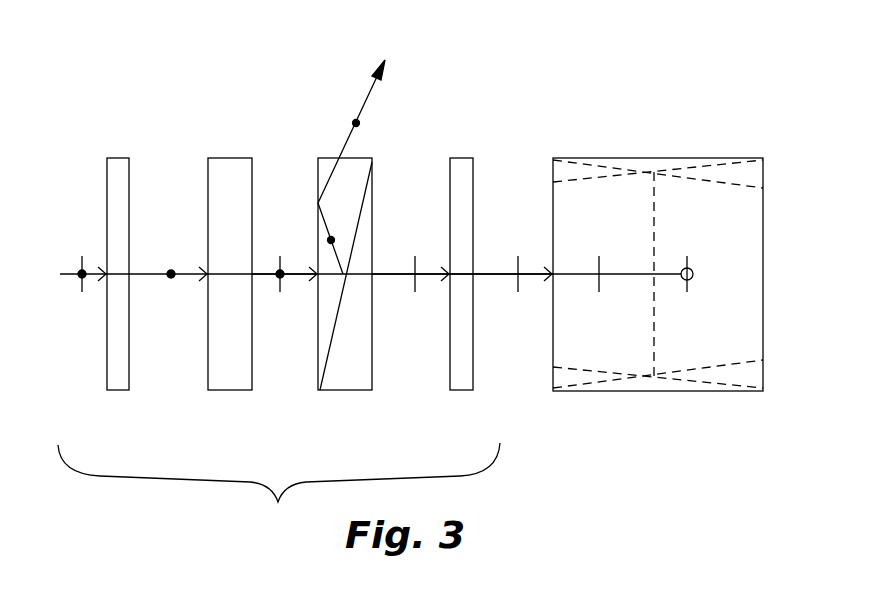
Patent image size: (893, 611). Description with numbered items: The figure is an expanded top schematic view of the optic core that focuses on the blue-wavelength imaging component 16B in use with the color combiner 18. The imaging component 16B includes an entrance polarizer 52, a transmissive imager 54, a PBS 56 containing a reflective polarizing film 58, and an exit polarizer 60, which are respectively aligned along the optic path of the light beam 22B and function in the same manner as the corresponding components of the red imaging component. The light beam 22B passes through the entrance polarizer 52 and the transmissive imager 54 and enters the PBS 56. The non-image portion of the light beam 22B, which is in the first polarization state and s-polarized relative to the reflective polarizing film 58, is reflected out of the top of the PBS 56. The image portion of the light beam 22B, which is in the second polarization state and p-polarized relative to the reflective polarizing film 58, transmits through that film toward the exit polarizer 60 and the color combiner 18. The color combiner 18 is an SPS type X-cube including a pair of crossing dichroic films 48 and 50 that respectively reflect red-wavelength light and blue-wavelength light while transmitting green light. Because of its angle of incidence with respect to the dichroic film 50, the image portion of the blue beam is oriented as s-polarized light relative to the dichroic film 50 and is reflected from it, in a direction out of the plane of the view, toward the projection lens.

The imaging component 16B is at (285, 345).
The color combiner 18 is at (684, 287).
The light beam 22B is at (70, 273).
The dichroic film 48 is at (608, 198).
The dichroic film 50 is at (684, 255).
The entrance polarizer 52 is at (115, 390).
The transmissive imager 54 is at (227, 390).
The PBS 56 is at (372, 309).
The reflective polarizing film 58 is at (339, 310).
The exit polarizer 60 is at (462, 390).